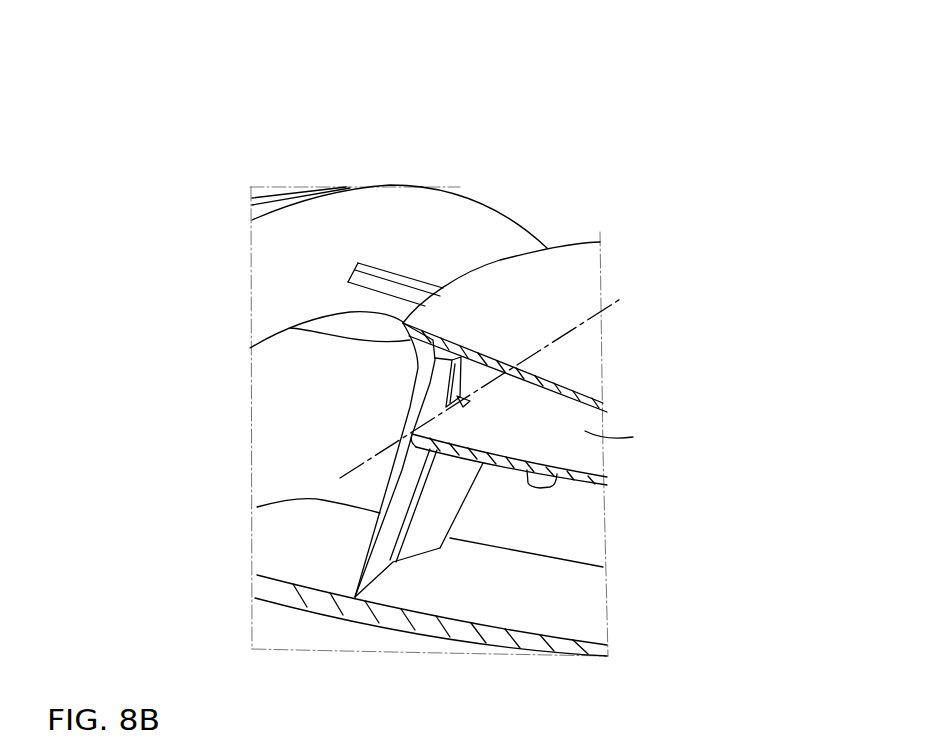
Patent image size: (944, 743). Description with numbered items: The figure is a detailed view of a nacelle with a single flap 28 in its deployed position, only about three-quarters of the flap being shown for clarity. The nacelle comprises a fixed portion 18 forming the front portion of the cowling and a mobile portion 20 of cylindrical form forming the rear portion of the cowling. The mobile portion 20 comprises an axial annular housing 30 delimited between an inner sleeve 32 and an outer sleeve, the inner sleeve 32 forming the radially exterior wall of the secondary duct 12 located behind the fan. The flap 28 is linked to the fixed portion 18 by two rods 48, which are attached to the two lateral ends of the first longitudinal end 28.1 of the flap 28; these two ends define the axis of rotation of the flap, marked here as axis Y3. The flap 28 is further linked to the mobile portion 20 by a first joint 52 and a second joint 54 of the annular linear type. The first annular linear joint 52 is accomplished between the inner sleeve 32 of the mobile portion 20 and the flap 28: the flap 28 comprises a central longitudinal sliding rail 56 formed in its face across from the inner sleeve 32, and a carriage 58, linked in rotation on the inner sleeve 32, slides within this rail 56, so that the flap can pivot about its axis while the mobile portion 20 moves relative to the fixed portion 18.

The fixed portion 18 is at (375, 136).
The rod 48 is at (390, 281).
The mobile portion 20 is at (586, 218).
The axis Y3 is at (632, 290).
The second joint 54 is at (390, 304).
The first longitudinal end 28.1 is at (290, 328).
The flap 28 is at (340, 551).
The central longitudinal sliding rail 56 is at (393, 563).
The first annular linear joint 52 is at (424, 398).
The carriage 58 is at (465, 403).
The axial annular housing 30 is at (633, 437).
The inner sleeve 32 is at (607, 478).
The secondary duct 12 is at (568, 612).